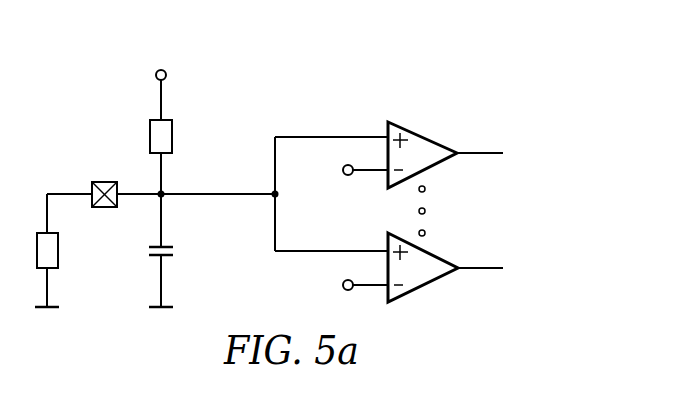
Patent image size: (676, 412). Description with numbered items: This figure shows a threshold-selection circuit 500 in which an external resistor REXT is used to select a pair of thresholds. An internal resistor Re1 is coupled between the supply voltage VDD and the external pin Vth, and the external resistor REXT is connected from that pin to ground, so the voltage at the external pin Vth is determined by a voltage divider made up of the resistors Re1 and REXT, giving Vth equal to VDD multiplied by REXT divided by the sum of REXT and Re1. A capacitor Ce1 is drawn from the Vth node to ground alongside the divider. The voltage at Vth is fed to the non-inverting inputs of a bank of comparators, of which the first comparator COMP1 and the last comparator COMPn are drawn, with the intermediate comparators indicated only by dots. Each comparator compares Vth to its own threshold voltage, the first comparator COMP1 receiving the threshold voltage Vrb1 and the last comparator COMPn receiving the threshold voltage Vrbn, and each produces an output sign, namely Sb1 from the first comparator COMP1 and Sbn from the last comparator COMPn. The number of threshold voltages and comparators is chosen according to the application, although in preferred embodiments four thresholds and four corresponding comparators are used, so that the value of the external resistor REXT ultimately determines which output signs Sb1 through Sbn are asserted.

The voltage detection circuit with comparator bank 500 is at (335, 60).
The supply voltage VDD is at (161, 80).
The internal resistor Re1 is at (181, 136).
The capacitor Ce1 is at (181, 275).
The external pin Vth is at (106, 181).
The external resistor REXT is at (73, 250).
The comparator COMP1 is at (422, 140).
The comparator COMPn is at (422, 284).
The threshold voltage Vrb1 is at (342, 171).
The threshold voltage Vrbn is at (340, 285).
The output sign Sb1 is at (501, 156).
The output sign Sbn is at (503, 271).